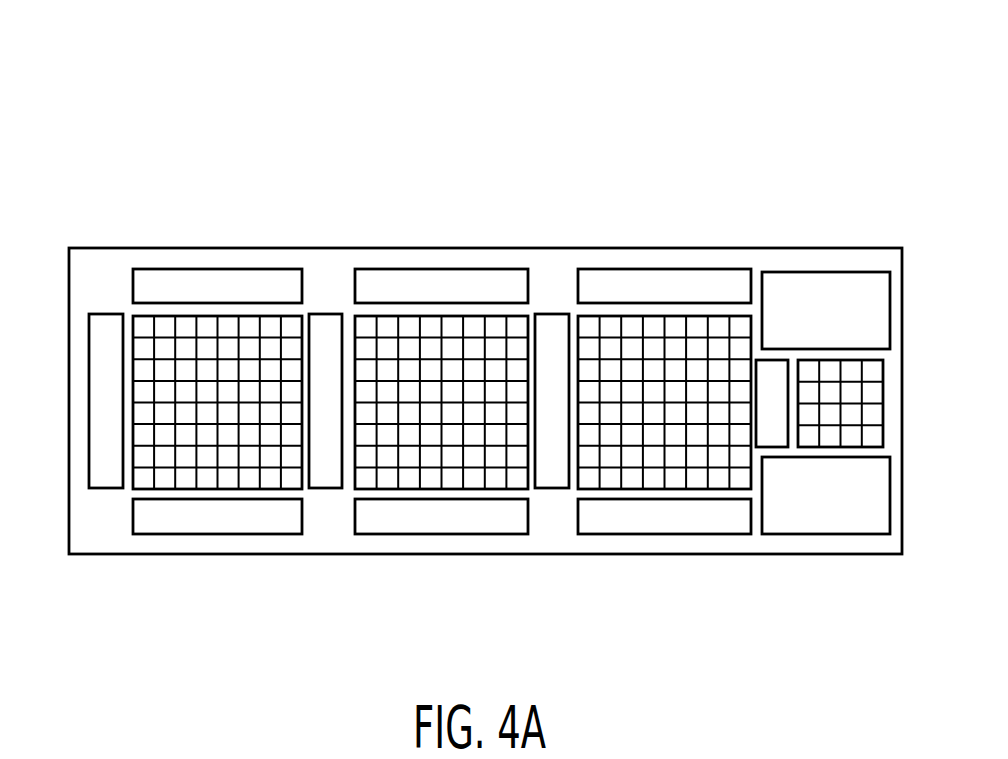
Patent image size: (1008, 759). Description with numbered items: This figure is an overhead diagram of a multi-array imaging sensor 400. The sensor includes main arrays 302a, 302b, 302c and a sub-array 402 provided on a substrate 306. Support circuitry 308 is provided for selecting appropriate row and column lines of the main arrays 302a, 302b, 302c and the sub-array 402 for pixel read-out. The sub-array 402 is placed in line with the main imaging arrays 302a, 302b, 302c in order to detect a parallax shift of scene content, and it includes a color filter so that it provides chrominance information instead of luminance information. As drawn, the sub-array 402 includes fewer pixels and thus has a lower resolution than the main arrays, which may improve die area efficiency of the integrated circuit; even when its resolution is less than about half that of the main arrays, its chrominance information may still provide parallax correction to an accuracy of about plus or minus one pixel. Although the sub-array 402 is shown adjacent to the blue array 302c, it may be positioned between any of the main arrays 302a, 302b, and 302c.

The multi-array imaging sensor 400 is at (490, 54).
The main array 302a is at (230, 310).
The main array 302b is at (432, 310).
The blue array 302c is at (655, 310).
The support circuitry 308 is at (84, 344).
The substrate 306 is at (124, 558).
The sub-array 402 is at (870, 353).